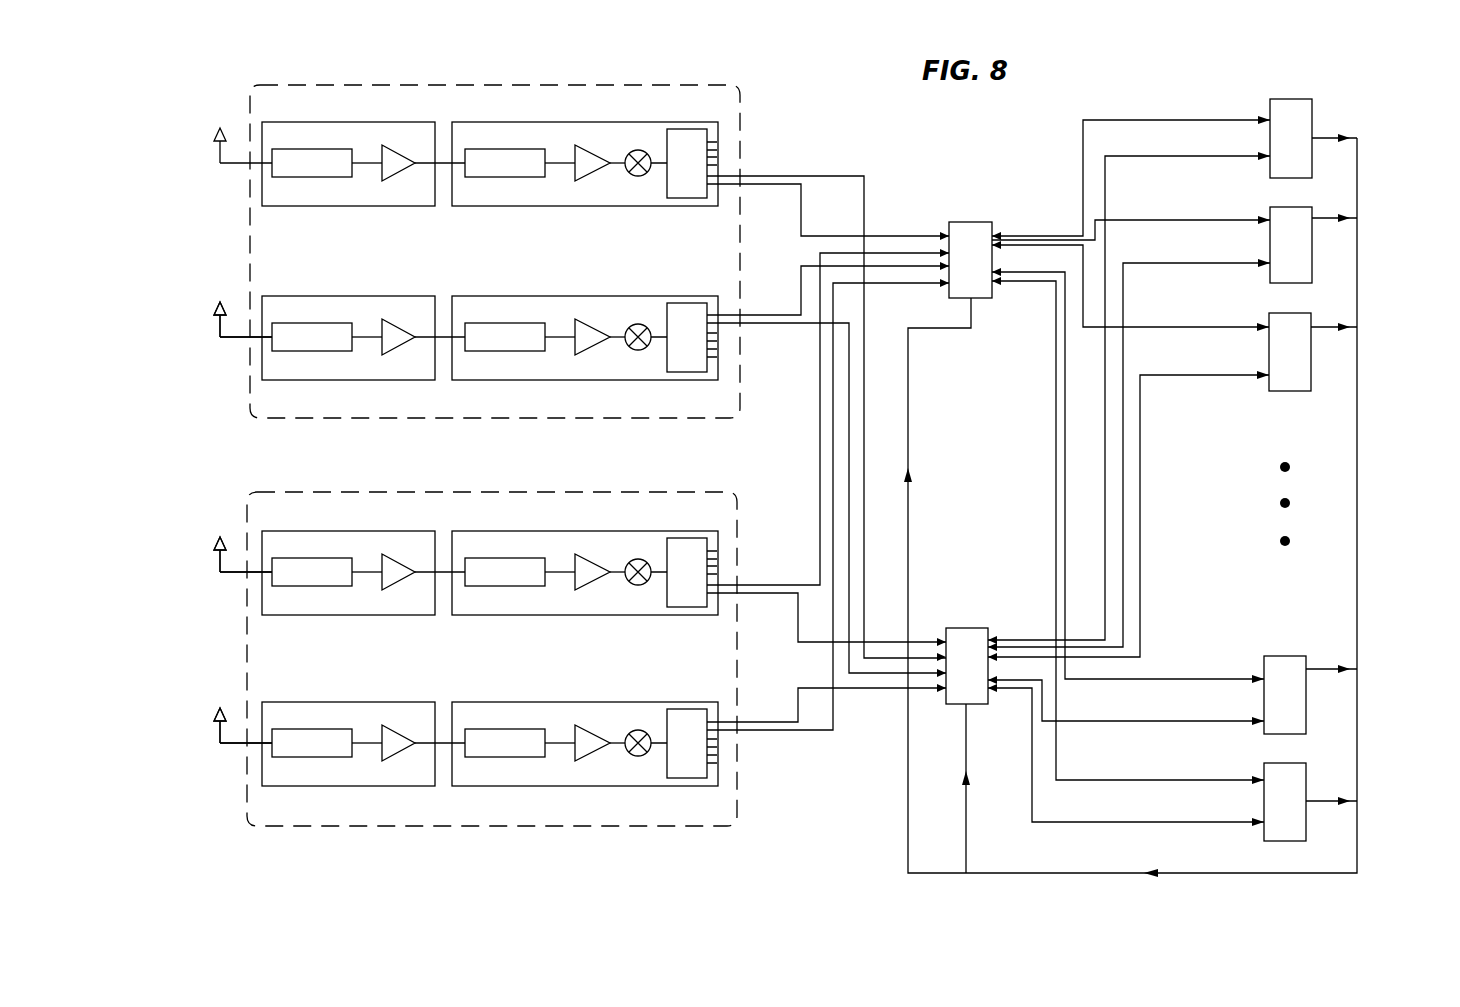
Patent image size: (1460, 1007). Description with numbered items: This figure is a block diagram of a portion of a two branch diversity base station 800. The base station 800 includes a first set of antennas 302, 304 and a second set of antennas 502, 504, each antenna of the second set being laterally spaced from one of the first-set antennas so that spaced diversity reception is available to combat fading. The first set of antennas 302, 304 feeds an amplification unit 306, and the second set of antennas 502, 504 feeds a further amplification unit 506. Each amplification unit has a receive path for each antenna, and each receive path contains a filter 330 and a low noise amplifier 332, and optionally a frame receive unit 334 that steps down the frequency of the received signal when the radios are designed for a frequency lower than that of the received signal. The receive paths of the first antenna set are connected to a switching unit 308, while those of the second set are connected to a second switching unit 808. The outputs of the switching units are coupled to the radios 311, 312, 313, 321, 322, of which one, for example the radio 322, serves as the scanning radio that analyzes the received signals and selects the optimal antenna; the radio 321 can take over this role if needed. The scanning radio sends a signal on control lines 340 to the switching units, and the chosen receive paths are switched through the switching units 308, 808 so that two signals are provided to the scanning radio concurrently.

The two branch diversity base station 800 is at (1452, 78).
The antenna 302 is at (212, 131).
The antenna 304 is at (212, 303).
The antenna 502 is at (210, 538).
The antenna 504 is at (210, 711).
The amplification unit 306 is at (742, 106).
The amplification unit 506 is at (728, 492).
The filter 330 is at (312, 178).
The low noise amplifier 332 is at (396, 181).
The frame receive unit 334 is at (606, 192).
The switching unit 308 is at (972, 222).
The second switching unit 808 is at (969, 628).
The radio 311 is at (1270, 99).
The radio 312 is at (1270, 207).
The radio 313 is at (1269, 313).
The radio 321 is at (1264, 656).
The radio 322 is at (1264, 763).
The control lines 340 is at (1212, 871).